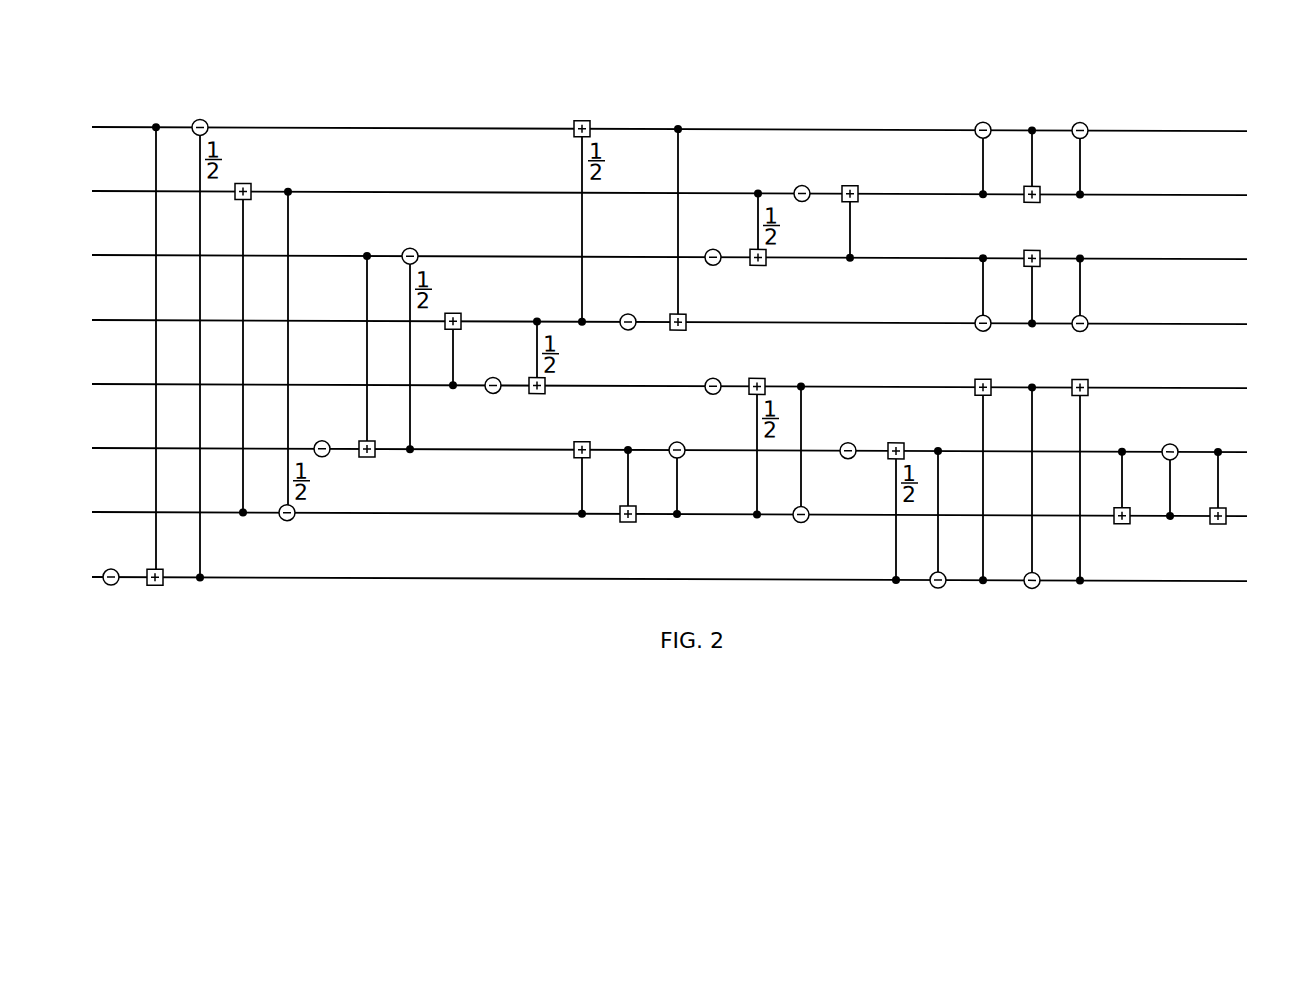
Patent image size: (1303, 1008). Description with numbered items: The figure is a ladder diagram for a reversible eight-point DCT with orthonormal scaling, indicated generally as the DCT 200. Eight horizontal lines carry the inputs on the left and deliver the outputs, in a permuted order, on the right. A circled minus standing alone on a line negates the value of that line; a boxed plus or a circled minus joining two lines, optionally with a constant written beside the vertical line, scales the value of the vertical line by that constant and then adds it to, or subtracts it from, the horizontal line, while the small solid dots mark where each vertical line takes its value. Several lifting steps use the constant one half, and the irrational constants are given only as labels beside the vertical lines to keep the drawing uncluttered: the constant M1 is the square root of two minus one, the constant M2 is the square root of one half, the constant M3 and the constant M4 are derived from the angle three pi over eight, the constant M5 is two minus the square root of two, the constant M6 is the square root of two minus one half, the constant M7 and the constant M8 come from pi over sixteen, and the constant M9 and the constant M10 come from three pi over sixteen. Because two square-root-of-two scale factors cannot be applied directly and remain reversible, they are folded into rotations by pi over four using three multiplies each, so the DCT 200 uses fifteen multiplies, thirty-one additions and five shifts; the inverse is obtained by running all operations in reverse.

The reversible 8-point DCT with orthonormal scaling 200 is at (671, 315).
The multiplication constant M1 is at (1043, 160).
The multiplication constant M2 is at (841, 324).
The multiplication constant M3 is at (1043, 292).
The multiplication constant M4 is at (1043, 288).
The multiplication constant M5 is at (593, 480).
The multiplication constant M6 is at (688, 480).
The multiplication constant M7 is at (1043, 481).
The multiplication constant M8 is at (1043, 485).
The multiplication constant M9 is at (1181, 486).
The multiplication constant M10 is at (1186, 482).